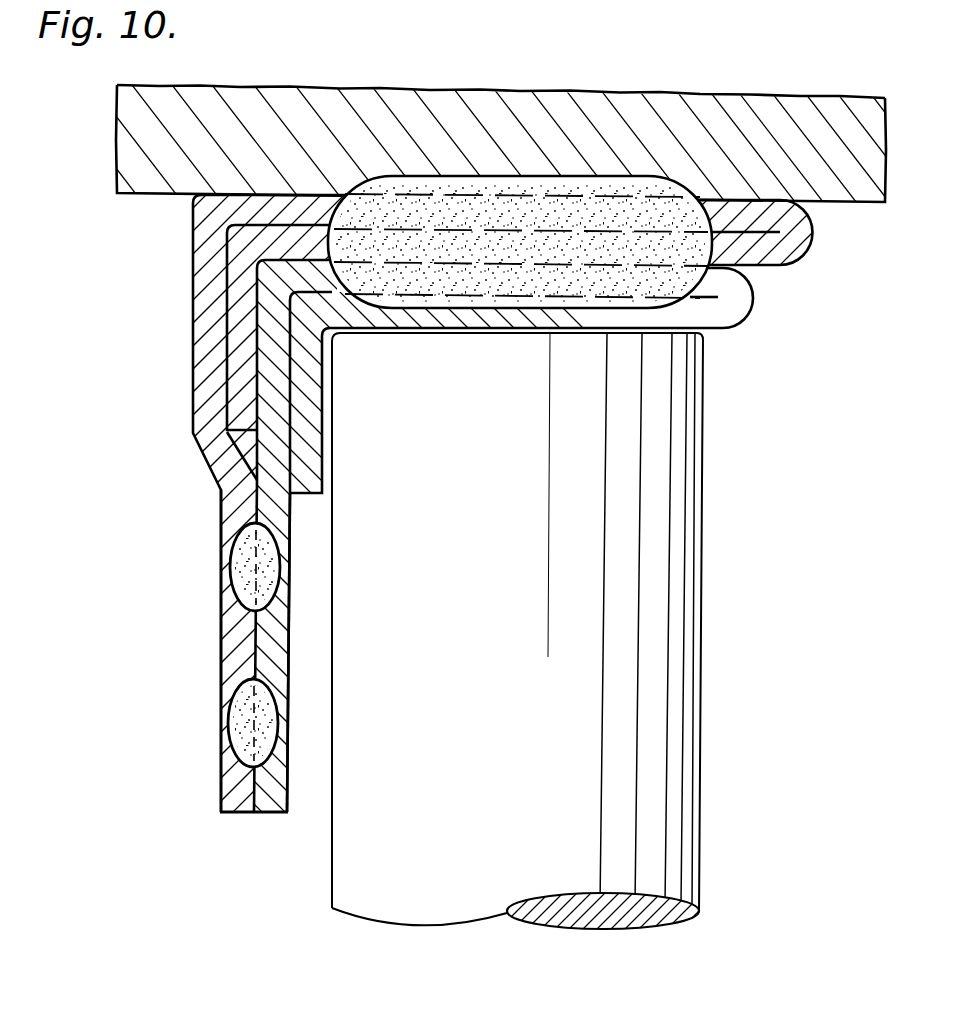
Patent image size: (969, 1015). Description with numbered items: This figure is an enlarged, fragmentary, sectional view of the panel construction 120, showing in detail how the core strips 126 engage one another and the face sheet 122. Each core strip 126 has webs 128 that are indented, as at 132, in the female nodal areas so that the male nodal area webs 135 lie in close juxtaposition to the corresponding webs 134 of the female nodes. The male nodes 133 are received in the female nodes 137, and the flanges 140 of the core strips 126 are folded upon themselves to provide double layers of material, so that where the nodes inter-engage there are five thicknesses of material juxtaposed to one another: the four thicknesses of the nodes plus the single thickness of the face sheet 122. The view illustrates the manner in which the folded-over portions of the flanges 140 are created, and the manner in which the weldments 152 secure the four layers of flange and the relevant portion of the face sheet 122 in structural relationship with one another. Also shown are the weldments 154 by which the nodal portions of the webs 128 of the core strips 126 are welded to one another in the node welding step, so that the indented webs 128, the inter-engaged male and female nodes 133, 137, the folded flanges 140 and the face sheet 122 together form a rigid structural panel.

The panel construction 120 is at (690, 93).
The face sheet 122 is at (352, 92).
The core strip 126 is at (298, 690).
The web 128 is at (221, 791).
The indentation 132 is at (221, 640).
The male node 133 is at (749, 291).
The female node web 134 is at (195, 318).
The male nodal area web 135 is at (291, 657).
The female node 137 is at (807, 255).
The flange 140 is at (483, 336).
The weldment 152 is at (498, 186).
The weldment 154 is at (232, 556).